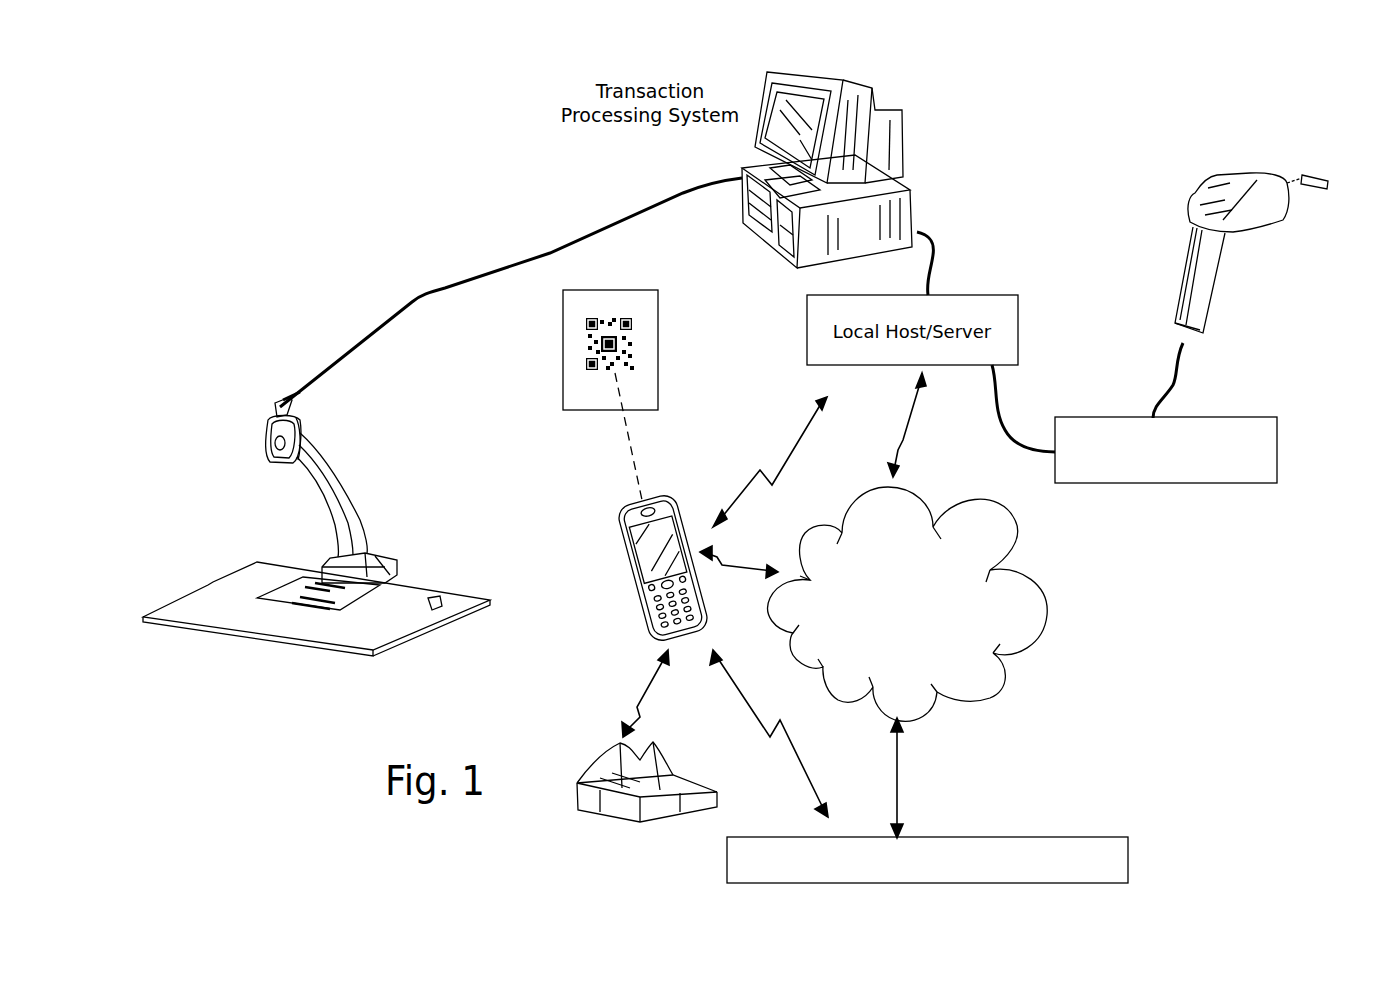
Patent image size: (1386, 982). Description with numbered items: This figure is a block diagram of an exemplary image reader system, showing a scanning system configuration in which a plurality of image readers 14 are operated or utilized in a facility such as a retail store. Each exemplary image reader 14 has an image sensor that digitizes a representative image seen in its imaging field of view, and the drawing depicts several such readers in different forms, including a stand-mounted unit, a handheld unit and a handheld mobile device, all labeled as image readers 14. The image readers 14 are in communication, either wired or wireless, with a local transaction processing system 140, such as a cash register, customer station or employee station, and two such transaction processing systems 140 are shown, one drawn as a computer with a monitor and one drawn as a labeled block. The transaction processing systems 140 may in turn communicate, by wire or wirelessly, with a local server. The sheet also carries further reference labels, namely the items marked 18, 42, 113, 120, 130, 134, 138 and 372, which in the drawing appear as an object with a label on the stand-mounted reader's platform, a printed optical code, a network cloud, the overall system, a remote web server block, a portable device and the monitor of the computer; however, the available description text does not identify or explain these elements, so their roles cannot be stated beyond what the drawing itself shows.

The image reader 14 is at (1257, 177).
The label / barcode object 18 is at (360, 598).
The item / sheet 42 is at (303, 630).
The optical code / QR code 113 is at (658, 355).
The network 120 is at (1007, 677).
The system 130 is at (527, 828).
The remote/web server 134 is at (1090, 838).
The portable device 138 is at (632, 822).
The local transaction processing system 140 is at (883, 213).
The monitor / display 372 is at (803, 115).